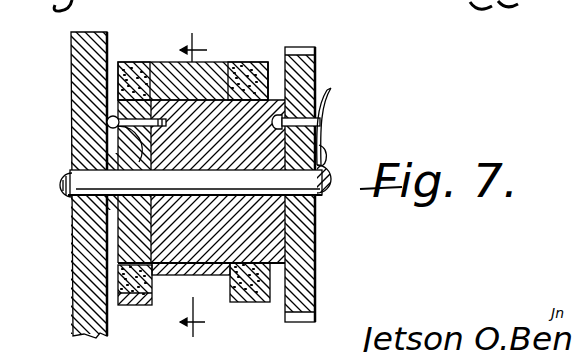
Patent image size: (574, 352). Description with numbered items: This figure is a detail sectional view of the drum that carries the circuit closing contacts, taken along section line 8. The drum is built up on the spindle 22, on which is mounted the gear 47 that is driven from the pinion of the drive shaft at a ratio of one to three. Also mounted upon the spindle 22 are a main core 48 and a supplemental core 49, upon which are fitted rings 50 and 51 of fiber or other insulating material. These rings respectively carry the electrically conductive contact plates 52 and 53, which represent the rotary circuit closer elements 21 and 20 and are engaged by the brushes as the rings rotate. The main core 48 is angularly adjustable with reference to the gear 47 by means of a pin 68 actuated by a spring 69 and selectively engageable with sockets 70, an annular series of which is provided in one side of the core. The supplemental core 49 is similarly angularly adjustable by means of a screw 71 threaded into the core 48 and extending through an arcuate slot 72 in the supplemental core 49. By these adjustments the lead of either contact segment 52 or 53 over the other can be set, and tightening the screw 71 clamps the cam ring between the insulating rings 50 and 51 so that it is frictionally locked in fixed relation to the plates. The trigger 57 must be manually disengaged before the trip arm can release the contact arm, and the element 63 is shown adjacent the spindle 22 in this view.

The section line 8- 8 is at (193, 186).
The rotary element of the circuit closer 20 is at (128, 72).
The rotary element of the circuit closer 21 is at (246, 66).
The spindle 22 is at (82, 191).
The gear 47 is at (305, 262).
The main core 48 is at (212, 250).
The supplemental core 49 is at (128, 232).
The ring 50 is at (265, 82).
The ring 51 is at (118, 90).
The contact plate 52 is at (270, 62).
The contact plate 53 is at (140, 67).
The trigger 57 is at (173, 276).
The bushing seat 63 is at (82, 135).
The pin 68 is at (324, 107).
The spring 69 is at (326, 132).
The sockets 70 is at (324, 142).
The screw 71 is at (72, 123).
The arcuate slot 72 is at (72, 163).